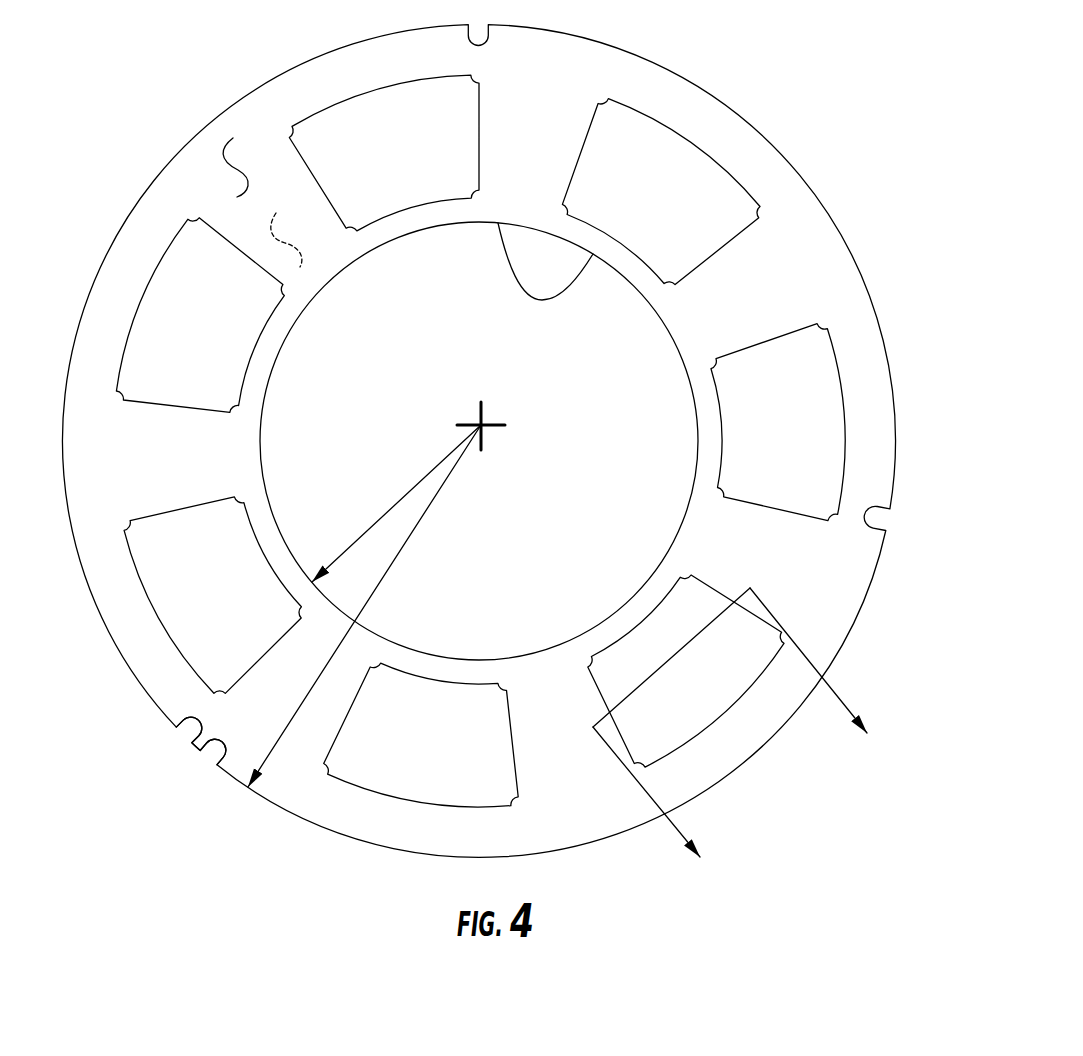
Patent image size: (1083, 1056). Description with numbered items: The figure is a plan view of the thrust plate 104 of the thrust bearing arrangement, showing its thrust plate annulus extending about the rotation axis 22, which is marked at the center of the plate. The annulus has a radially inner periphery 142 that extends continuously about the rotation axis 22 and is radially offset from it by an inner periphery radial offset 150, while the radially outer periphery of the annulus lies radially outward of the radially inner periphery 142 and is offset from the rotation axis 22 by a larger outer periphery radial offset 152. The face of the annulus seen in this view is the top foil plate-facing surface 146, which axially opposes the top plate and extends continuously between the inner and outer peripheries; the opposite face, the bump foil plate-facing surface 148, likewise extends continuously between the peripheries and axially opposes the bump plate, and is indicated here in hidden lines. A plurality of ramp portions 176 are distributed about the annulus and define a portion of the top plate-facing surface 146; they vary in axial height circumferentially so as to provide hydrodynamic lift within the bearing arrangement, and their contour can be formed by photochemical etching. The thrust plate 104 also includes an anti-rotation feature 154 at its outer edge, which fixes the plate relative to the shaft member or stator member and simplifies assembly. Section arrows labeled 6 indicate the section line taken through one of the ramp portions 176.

The thrust plate 104 is at (243, 901).
The radially inner periphery 142 is at (590, 258).
The top foil plate-facing surface 146 is at (225, 162).
The bump foil plate-facing surface 148 is at (283, 238).
The inner periphery radial offset 150 is at (377, 522).
The outer periphery radial offset 152 is at (300, 710).
The anti-rotation feature 154 is at (180, 758).
The ramp portions 176 is at (693, 602).
The rotation axis 22 is at (483, 415).
The section line 6- 6 is at (735, 730).